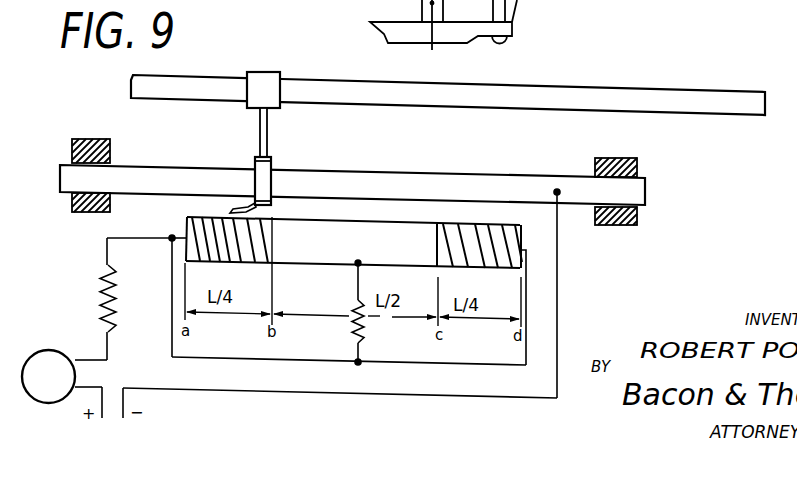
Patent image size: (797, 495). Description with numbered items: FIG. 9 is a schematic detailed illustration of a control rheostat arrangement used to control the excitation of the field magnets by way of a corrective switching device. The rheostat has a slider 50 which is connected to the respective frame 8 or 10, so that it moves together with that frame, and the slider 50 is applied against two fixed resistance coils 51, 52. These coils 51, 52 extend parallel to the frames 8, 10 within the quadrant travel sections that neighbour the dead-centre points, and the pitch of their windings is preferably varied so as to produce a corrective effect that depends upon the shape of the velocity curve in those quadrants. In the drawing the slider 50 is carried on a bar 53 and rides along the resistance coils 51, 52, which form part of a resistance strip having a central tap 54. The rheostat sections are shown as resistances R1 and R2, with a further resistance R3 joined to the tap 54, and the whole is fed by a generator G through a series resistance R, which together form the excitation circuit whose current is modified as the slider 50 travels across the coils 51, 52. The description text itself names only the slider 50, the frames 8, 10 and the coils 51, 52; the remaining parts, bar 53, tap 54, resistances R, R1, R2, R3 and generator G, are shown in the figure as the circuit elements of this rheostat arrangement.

The frame 8 is at (448, 112).
The frame 10 is at (666, 99).
The slider 50 is at (230, 214).
The fixed resistance coil 51 is at (252, 244).
The fixed resistance coil 52 is at (468, 250).
The bar / shaft 53 is at (428, 187).
The center tap 54 is at (363, 251).
The resistor R is at (98, 299).
The resistor R1 is at (190, 217).
The resistor R2 is at (512, 270).
The resistor R3 is at (376, 314).
The galvanometer G is at (48, 376).